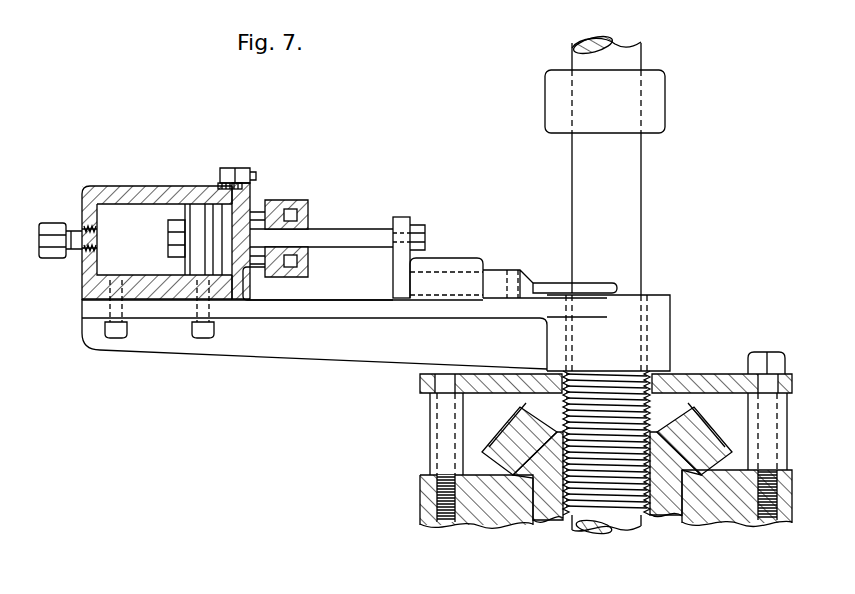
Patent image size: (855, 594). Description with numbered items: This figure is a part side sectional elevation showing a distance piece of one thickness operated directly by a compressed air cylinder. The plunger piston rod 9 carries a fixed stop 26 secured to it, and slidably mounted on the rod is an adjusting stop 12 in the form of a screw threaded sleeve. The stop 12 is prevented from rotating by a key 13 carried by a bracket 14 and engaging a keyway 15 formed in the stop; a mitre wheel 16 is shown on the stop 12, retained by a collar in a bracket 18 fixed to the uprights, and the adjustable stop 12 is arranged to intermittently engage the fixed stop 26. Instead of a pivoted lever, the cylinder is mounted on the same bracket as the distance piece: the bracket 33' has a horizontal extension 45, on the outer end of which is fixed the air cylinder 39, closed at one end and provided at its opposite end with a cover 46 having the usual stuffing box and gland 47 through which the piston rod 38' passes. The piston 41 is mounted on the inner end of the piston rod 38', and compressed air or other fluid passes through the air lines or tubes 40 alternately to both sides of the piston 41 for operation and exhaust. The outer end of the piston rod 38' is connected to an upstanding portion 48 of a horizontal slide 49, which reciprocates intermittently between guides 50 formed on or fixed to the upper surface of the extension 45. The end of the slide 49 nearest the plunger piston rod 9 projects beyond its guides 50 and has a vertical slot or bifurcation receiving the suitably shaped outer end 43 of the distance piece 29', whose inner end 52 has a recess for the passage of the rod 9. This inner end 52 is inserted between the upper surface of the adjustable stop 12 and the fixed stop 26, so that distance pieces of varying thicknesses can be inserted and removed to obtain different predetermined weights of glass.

The piston rod 9 is at (606, 202).
The adjusting stop 12 is at (570, 517).
The key 13 is at (671, 386).
The bracket 14 is at (796, 380).
The keyway 15 is at (643, 402).
The mitre wheel 16 is at (727, 443).
The bracket 18 is at (420, 492).
The fixed stop 26 is at (605, 101).
The distance piece 29' is at (531, 331).
The bracket 33' is at (624, 333).
The piston rod 38' is at (318, 264).
The air cylinder 39 is at (108, 186).
The air lines or tubes 40 is at (38, 222).
The piston 41 is at (180, 218).
The outer end of the distance piece 43 is at (537, 278).
The horizontal extension 45 is at (267, 320).
The cover 46 is at (240, 170).
The stuffing box and gland 47 is at (305, 207).
The upstanding portion 48 is at (407, 218).
The horizontal slide 49 is at (497, 269).
The guides 50 is at (433, 294).
The inner end of the distance piece 52 is at (620, 287).